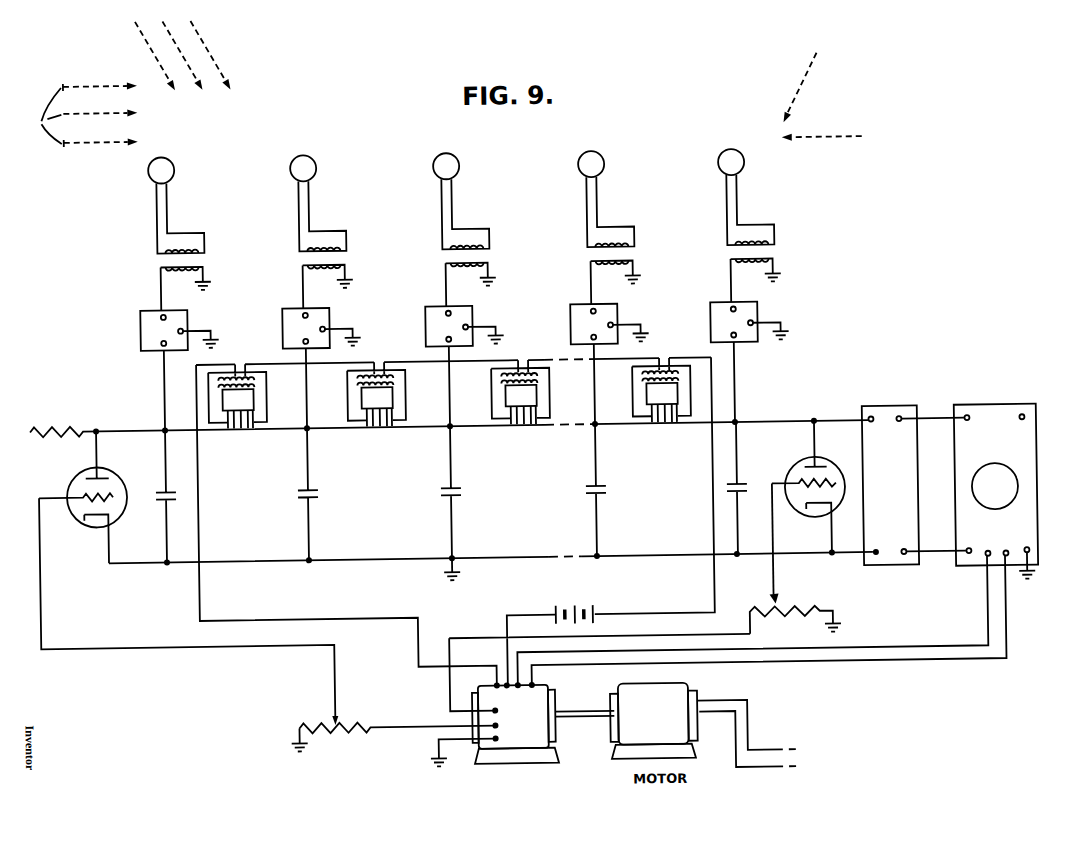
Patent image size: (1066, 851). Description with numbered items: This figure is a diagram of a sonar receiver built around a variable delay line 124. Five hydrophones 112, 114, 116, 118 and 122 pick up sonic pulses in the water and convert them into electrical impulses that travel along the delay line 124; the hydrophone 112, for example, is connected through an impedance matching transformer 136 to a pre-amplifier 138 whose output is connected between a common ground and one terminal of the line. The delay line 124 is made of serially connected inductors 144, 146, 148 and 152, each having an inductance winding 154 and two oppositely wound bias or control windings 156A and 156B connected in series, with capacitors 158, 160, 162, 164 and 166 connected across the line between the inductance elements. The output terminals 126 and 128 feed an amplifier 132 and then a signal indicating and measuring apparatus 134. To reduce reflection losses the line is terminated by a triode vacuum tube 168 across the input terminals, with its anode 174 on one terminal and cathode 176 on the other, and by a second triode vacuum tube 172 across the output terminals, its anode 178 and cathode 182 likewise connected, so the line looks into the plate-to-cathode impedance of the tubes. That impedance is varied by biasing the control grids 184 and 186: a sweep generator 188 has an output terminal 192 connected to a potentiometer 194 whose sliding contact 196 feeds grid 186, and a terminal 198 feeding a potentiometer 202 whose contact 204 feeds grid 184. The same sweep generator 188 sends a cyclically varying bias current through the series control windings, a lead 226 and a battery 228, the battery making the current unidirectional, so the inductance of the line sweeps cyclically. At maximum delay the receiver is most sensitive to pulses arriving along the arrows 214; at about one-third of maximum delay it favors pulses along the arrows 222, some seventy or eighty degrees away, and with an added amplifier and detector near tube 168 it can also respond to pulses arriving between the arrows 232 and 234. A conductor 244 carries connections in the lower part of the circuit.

The hydrophone 112 is at (152, 167).
The hydrophone 114 is at (294, 167).
The hydrophone 116 is at (437, 167).
The hydrophone 118 is at (582, 168).
The hydrophone 122 is at (722, 167).
The delay line 124 is at (133, 415).
The output terminal 126 is at (871, 427).
The output terminal 128 is at (874, 554).
The amplifier 132 is at (890, 476).
The signal indicating and measuring apparatus 134 is at (979, 394).
The impedance matching transformer 136 is at (202, 256).
The pre-amplifier 138 is at (142, 322).
The inductor 144 is at (252, 401).
The inductor 146 is at (374, 434).
The inductor 148 is at (522, 434).
The inductor 152 is at (658, 434).
The inductance winding 154 is at (240, 426).
The bias or control winding 156A is at (244, 387).
The bias or control winding 156B is at (236, 372).
The capacitor 158 is at (156, 492).
The capacitor 160 is at (297, 489).
The capacitor 162 is at (441, 490).
The capacitor 164 is at (587, 490).
The capacitor 166 is at (749, 490).
The triode vacuum tube 168 is at (95, 498).
The triode vacuum tube 172 is at (808, 461).
The anode 174 is at (104, 465).
The cathode 176 is at (97, 521).
The anode 178 is at (820, 465).
The cathode 182 is at (820, 510).
The control grid 184 is at (112, 488).
The control grid 186 is at (797, 480).
The sweep generator 188 is at (508, 735).
The output terminal 192 is at (494, 710).
The potentiometer 194 is at (797, 612).
The sliding contact 196 is at (779, 602).
The terminal 198 is at (494, 725).
The potentiometer 202 is at (321, 717).
The potentiometer contact 204 is at (339, 719).
The arrows 214 is at (78, 114).
The arrows 222 is at (208, 41).
The lead 226 is at (710, 587).
The battery 228 is at (560, 612).
The arrow 232 is at (834, 142).
The arrow 234 is at (818, 74).
The conductor 244 is at (295, 618).